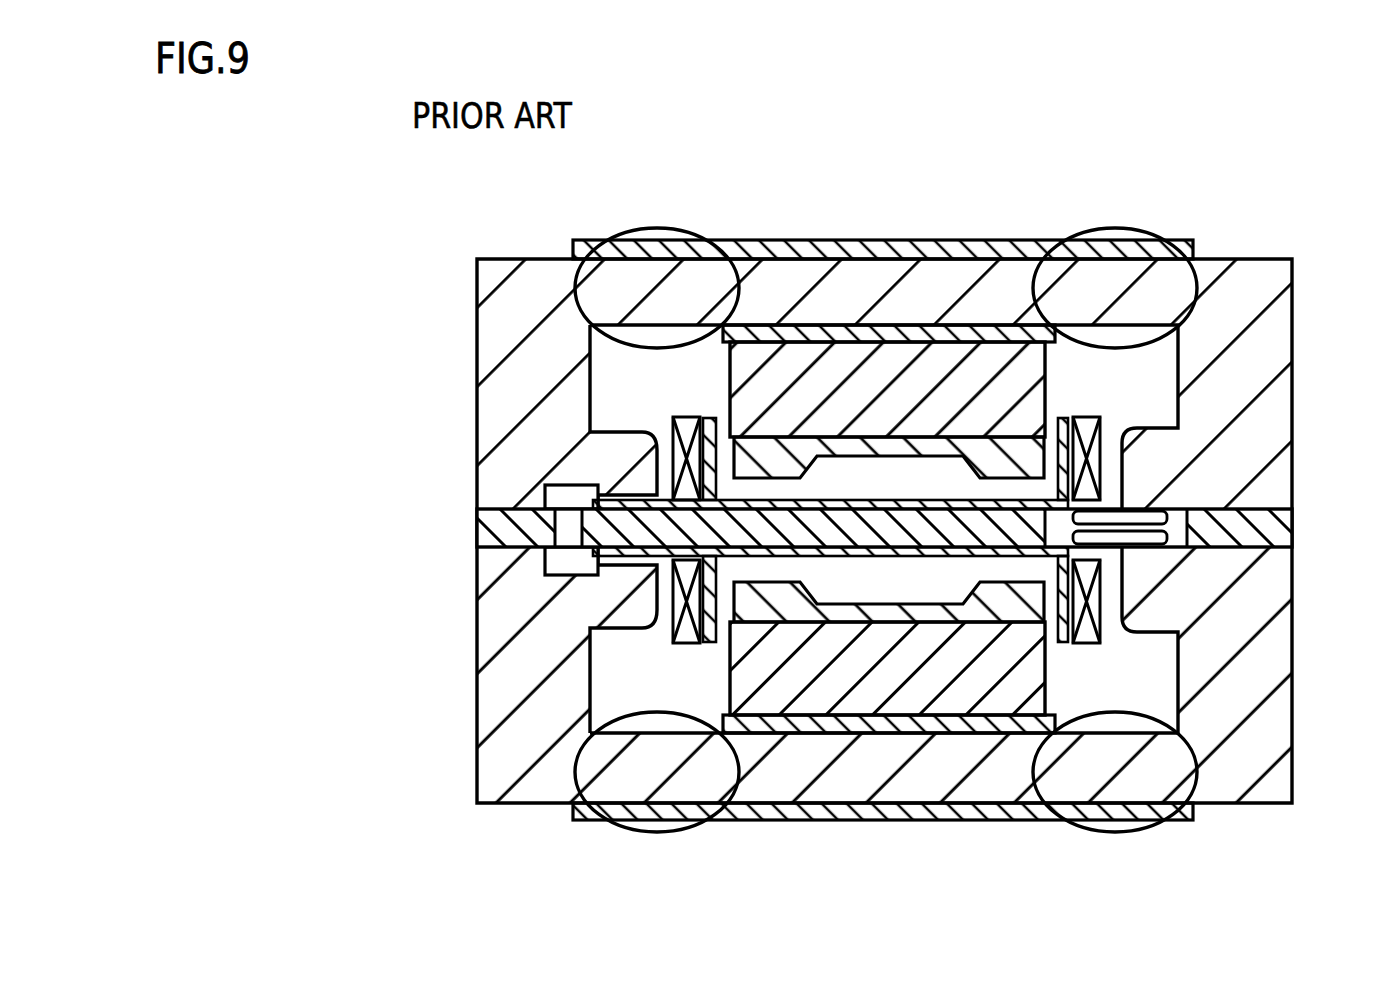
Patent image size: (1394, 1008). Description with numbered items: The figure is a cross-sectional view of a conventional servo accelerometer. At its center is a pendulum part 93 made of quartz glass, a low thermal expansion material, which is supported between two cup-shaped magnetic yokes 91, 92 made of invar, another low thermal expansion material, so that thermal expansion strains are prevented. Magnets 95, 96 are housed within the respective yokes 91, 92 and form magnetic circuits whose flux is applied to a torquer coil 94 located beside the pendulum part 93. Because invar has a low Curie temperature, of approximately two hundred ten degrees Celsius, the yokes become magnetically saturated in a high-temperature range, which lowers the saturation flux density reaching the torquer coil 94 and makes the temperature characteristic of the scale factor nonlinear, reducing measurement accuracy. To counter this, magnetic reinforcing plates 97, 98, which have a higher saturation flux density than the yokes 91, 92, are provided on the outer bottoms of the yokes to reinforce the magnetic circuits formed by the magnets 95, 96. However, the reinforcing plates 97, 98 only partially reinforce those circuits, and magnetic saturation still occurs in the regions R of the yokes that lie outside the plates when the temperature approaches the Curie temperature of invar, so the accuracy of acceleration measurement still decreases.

The magnetic yoke 91 is at (1294, 327).
The magnetic yoke 92 is at (1294, 630).
The pendulum part 93 is at (1294, 515).
The torquer coil 94 is at (1086, 413).
The magnet 95 is at (955, 370).
The magnet 96 is at (965, 680).
The magnetic reinforcing plate 97 is at (808, 241).
The magnetic reinforcing plate 98 is at (808, 820).
The region R is at (673, 234).